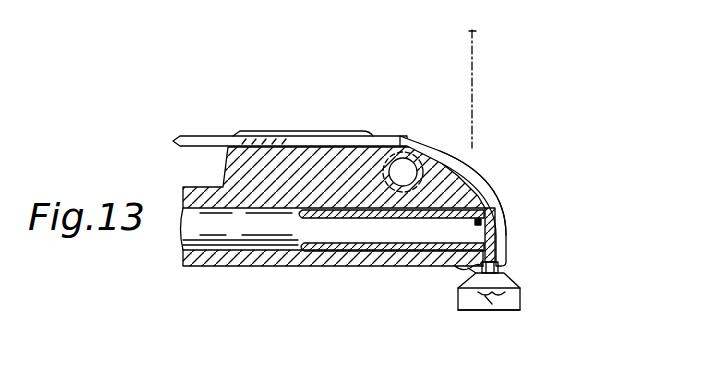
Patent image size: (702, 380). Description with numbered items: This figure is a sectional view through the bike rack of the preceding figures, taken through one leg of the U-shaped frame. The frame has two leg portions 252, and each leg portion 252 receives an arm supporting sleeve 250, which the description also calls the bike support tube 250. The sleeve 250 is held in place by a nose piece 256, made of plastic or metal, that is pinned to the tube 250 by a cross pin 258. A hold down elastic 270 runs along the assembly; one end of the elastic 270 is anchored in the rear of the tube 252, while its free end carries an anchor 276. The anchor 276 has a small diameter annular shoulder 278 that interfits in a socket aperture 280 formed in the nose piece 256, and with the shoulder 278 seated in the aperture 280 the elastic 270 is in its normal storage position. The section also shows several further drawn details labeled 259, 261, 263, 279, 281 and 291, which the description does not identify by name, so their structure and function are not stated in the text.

The arm supporting sleeve 250 is at (243, 258).
The leg portion 252 is at (360, 230).
The nose piece 256 is at (487, 172).
The cross pin 258 is at (494, 222).
The axis line 259 is at (484, 45).
The ball 261 is at (447, 160).
The arm outer portion 263 is at (506, 181).
The hold down elastic 270 is at (318, 136).
The anchor 276 is at (522, 299).
The small diameter annular shoulder 278 is at (500, 268).
The lobe 279 is at (460, 268).
The socket aperture 280 is at (467, 271).
The knob base 281 is at (495, 314).
The plate 291 is at (258, 140).